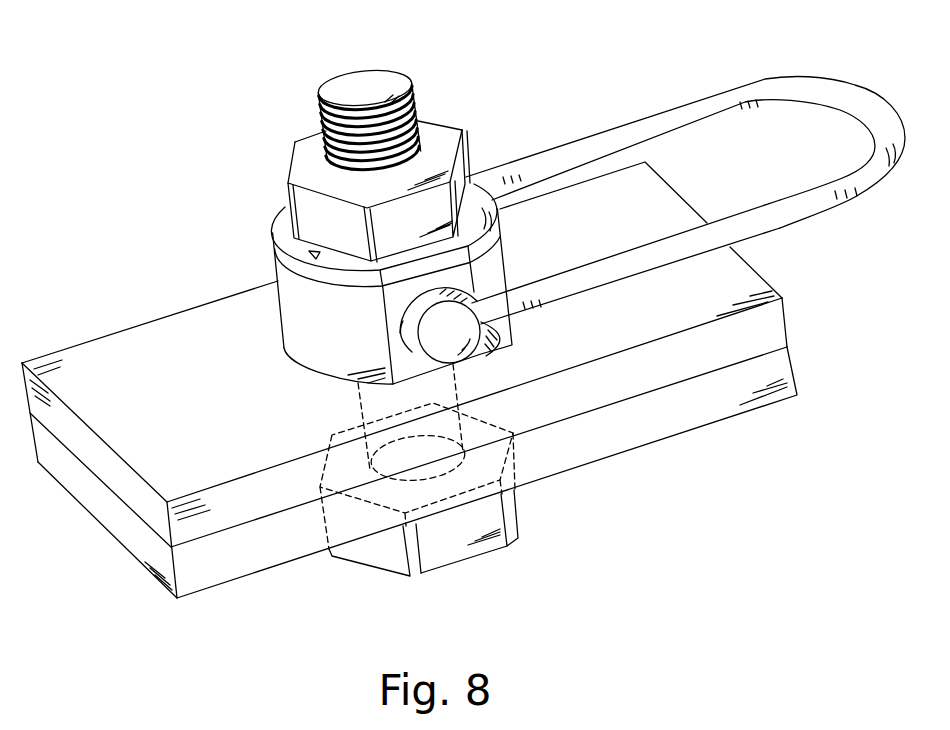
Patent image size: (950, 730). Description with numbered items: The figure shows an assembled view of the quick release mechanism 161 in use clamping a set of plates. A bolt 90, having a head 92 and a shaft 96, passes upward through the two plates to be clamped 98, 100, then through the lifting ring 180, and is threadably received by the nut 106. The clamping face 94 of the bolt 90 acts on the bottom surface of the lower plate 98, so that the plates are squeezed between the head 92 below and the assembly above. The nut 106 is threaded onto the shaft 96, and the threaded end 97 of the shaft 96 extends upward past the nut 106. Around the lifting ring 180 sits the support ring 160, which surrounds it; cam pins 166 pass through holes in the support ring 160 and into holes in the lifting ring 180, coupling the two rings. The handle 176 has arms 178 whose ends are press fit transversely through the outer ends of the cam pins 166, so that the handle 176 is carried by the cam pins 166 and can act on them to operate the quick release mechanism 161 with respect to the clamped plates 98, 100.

The threaded end 97 is at (410, 108).
The nut 106 is at (463, 130).
The handle 176 is at (834, 80).
The arms 178 is at (728, 213).
The quick release mechanism 161 is at (252, 216).
The lifting ring 180 is at (304, 254).
The support ring 160 is at (273, 265).
The cam pins 166 is at (425, 311).
The plate to be clamped 100 is at (113, 327).
The shaft 96 is at (443, 390).
The clamping face 94 is at (487, 460).
The plate to be clamped 98 is at (238, 580).
The head 92 is at (443, 548).
The bolt 90 is at (400, 578).